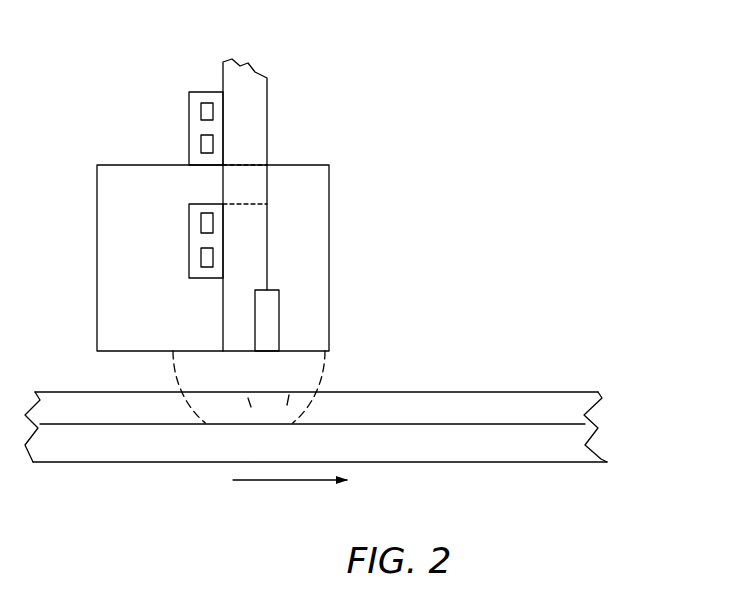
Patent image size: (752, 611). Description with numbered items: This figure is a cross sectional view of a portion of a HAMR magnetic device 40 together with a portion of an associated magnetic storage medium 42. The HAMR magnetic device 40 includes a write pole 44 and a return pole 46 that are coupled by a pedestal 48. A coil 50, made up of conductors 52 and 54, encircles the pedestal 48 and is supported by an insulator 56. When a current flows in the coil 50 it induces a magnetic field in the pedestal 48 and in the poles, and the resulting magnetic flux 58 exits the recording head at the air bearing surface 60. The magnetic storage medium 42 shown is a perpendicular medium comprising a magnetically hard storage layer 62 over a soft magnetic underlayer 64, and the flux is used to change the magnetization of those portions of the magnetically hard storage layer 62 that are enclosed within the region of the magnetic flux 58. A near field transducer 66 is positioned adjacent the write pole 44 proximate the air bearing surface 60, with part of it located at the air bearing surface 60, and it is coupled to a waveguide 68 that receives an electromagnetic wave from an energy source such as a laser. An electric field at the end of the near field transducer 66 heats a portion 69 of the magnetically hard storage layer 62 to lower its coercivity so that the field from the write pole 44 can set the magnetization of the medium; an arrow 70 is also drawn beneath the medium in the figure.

The HAMR magnetic device 40 is at (422, 92).
The magnetic storage medium 42 is at (603, 365).
The write pole 44 is at (307, 210).
The return pole 46 is at (120, 289).
The pedestal 48 is at (249, 185).
The coil 50 is at (180, 80).
The conductor 52 is at (209, 258).
The conductor 54 is at (200, 146).
The insulator 56 is at (197, 97).
The magnetic flux 58 is at (322, 382).
The air bearing surface 60 is at (117, 351).
The magnetically hard storage layer 62 is at (558, 413).
The soft magnetic underlayer 64 is at (552, 437).
The near field transducer 66 is at (275, 312).
The waveguide 68 is at (242, 128).
The heated portion 69 is at (250, 416).
The web travel direction 70 is at (287, 482).